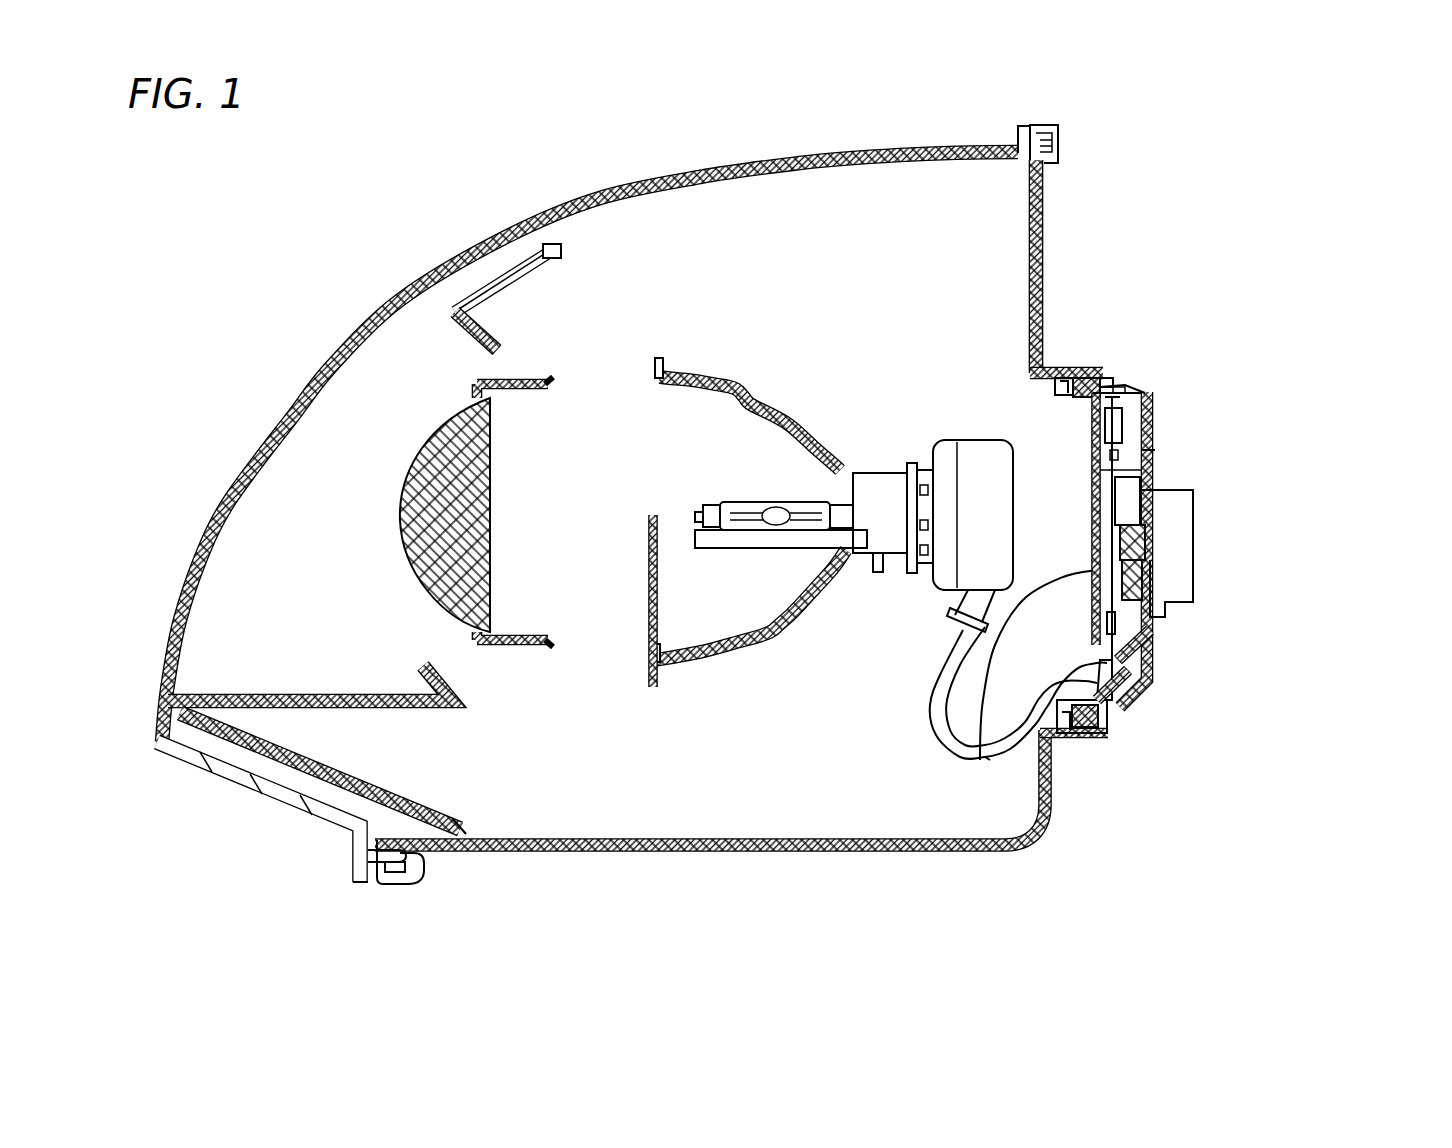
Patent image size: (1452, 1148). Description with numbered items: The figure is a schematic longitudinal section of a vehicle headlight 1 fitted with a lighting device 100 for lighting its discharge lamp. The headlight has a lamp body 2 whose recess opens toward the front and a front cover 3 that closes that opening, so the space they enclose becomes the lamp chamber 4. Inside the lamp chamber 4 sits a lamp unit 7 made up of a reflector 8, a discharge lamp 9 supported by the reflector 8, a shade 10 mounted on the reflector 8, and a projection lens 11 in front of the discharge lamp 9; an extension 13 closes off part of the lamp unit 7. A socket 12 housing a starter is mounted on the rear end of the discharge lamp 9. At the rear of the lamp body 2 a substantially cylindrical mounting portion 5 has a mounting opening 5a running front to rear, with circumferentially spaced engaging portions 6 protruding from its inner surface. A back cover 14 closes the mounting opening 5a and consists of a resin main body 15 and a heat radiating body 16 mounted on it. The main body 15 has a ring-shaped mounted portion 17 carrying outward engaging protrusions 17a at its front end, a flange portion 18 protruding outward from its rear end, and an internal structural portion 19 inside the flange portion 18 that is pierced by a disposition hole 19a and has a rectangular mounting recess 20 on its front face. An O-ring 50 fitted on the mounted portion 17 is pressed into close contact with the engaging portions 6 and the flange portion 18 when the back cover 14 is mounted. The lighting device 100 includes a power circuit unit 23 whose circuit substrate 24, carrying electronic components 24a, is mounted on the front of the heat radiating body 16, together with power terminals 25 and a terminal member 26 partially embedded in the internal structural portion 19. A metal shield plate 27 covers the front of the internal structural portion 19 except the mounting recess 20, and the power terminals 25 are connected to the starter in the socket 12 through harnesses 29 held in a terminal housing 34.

The vehicle headlight 1 is at (322, 228).
The lamp body 2 is at (1040, 227).
The front cover 3 is at (554, 209).
The lamp chamber 4 is at (763, 286).
The mounting portion 5 is at (1080, 377).
The mounting opening 5a is at (1113, 397).
The engaging portion 6 is at (1073, 387).
The lamp unit 7 is at (697, 375).
The reflector 8 is at (717, 385).
The discharge lamp 9 is at (806, 502).
The shade 10 is at (660, 601).
The projection lens 11 is at (442, 432).
The socket 12 is at (979, 452).
The extension 13 is at (280, 690).
The back cover 14 is at (1267, 518).
The main body 15 is at (1143, 387).
The heat radiating body 16 is at (1153, 423).
The mounted portion 17 is at (1113, 387).
The engaging protrusion 17a is at (1072, 380).
The flange portion 18 is at (1107, 387).
The internal structural portion 19 is at (1147, 637).
The disposition hole 19a is at (1140, 620).
The mounting recess 20 is at (1133, 693).
The power circuit unit 23 is at (1242, 596).
The circuit substrate 24 is at (1230, 568).
The electronic component 24a is at (1160, 523).
The power terminal 25 is at (1143, 640).
The terminal member 26 is at (1157, 450).
The shield plate 27 is at (990, 760).
The harness 29 is at (997, 777).
The terminal housing 34 is at (1127, 717).
The O-ring 50 is at (1093, 380).
The lighting device 100 is at (1380, 870).